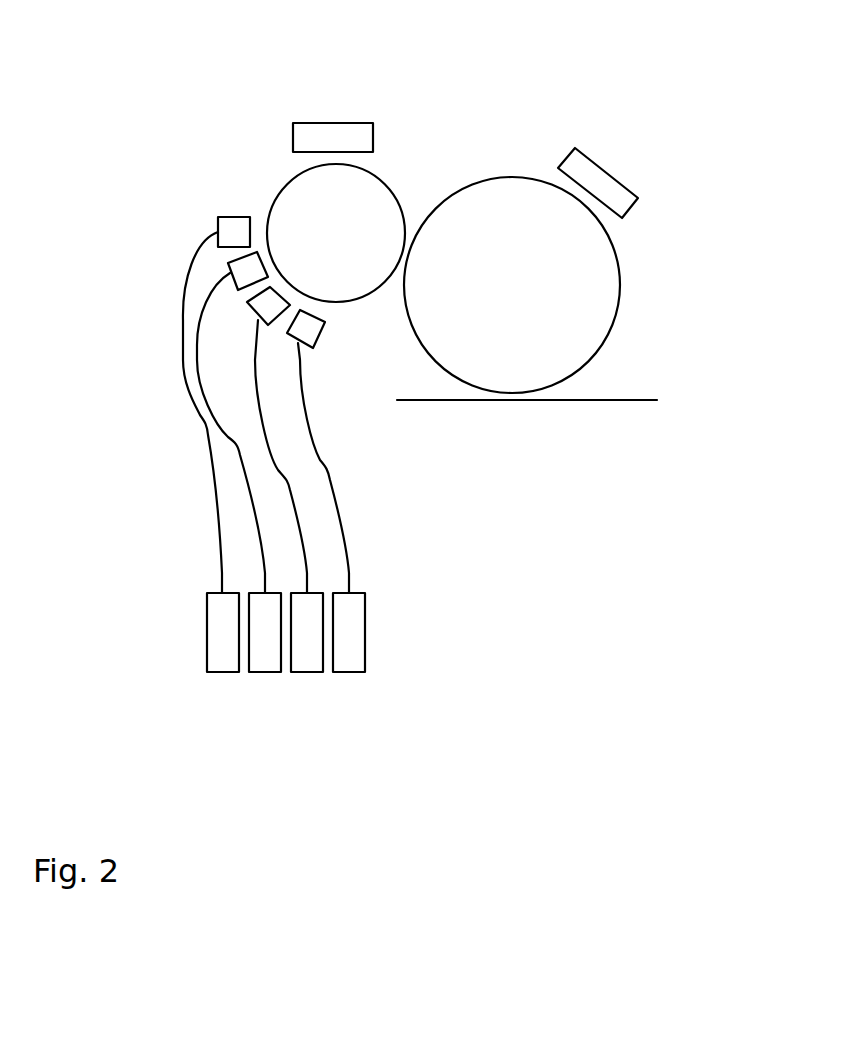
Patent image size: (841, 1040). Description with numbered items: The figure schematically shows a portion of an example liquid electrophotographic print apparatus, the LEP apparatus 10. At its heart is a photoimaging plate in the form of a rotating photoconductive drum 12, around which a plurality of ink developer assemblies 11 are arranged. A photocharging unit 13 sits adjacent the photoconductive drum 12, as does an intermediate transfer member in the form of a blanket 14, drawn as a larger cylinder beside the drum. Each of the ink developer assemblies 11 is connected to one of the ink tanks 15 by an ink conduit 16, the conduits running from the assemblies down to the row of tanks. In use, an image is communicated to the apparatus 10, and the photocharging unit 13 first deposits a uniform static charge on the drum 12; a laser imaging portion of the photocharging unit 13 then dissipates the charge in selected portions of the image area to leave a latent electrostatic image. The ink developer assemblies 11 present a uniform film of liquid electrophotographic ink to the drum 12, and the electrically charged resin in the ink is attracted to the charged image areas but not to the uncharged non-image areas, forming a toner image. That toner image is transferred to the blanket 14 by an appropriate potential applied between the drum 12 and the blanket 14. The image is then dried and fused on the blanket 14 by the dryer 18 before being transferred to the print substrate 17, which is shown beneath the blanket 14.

The LEP apparatus 10 is at (213, 97).
The ink developer assemblies 11 is at (218, 217).
The photoconductive drum 12 is at (390, 187).
The photocharging unit 13 is at (345, 123).
The blanket 14 is at (617, 255).
The ink tanks 15 is at (207, 640).
The ink conduits 16 is at (182, 358).
The print substrate 17 is at (610, 400).
The dryer 18 is at (608, 173).